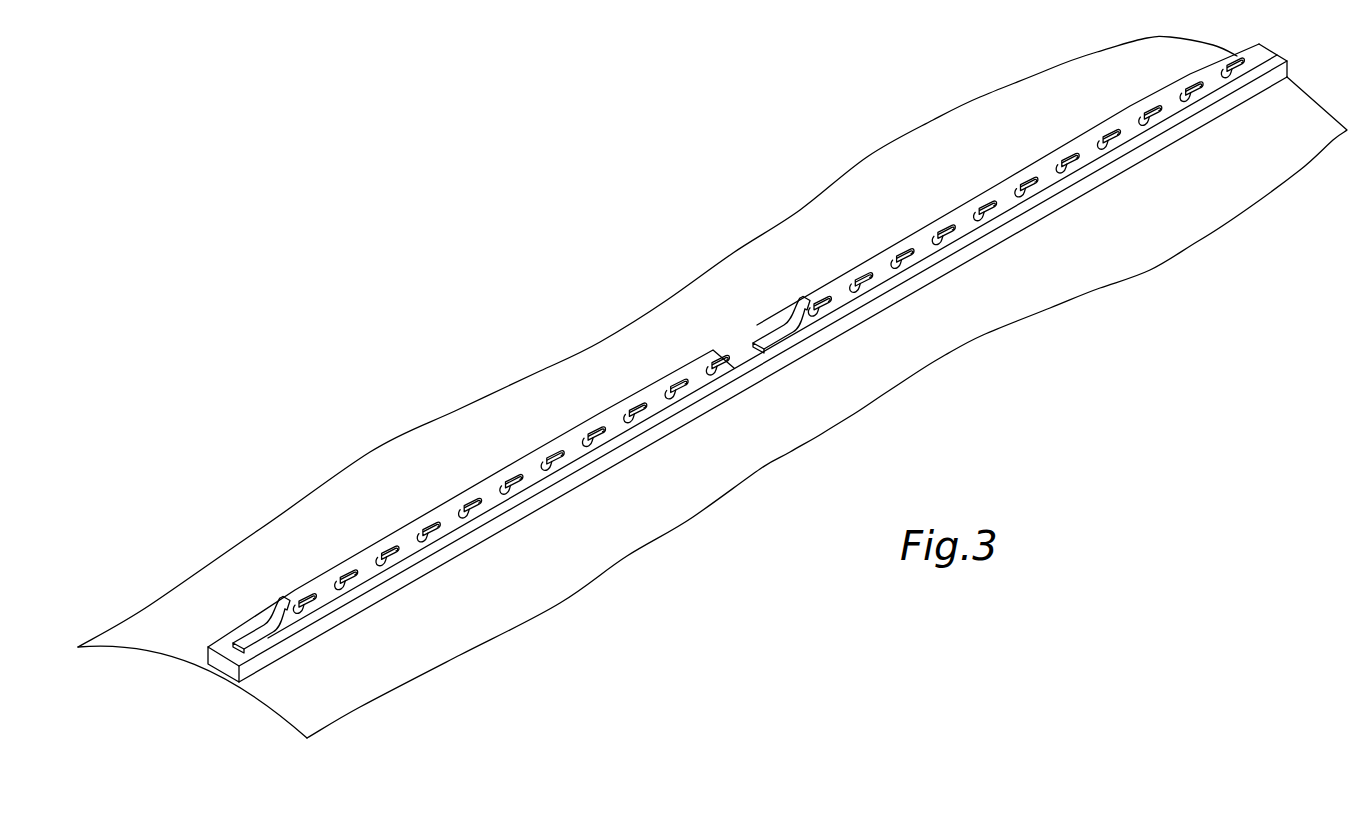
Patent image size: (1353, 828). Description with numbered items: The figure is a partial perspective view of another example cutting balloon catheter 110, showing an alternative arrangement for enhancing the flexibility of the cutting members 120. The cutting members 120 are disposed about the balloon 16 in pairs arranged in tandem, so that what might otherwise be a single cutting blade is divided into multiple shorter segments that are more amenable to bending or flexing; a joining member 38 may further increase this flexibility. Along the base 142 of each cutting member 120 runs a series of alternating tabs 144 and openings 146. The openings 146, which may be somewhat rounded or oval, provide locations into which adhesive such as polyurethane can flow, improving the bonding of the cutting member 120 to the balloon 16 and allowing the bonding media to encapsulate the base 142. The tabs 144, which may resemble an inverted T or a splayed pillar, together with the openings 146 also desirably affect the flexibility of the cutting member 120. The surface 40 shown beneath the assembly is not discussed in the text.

The balloon 16 is at (712, 387).
The joining member 38 is at (227, 650).
The substrate sheet 40 is at (383, 495).
The catheter 110 is at (701, 366).
The cutting members 120 is at (803, 285).
The base 142 is at (372, 580).
The tabs 144 is at (465, 540).
The openings 146 is at (568, 480).